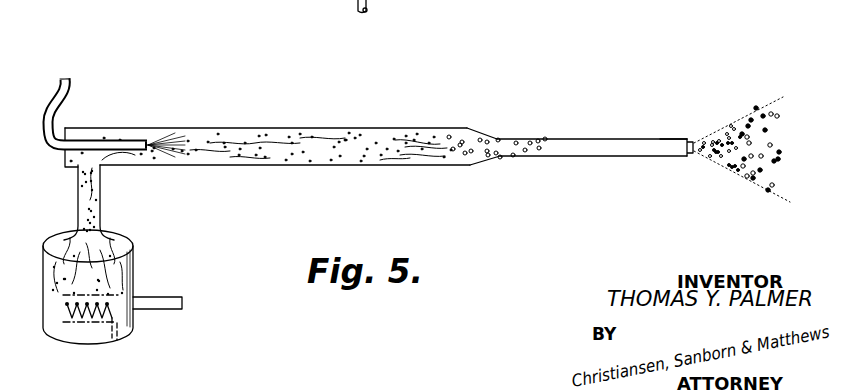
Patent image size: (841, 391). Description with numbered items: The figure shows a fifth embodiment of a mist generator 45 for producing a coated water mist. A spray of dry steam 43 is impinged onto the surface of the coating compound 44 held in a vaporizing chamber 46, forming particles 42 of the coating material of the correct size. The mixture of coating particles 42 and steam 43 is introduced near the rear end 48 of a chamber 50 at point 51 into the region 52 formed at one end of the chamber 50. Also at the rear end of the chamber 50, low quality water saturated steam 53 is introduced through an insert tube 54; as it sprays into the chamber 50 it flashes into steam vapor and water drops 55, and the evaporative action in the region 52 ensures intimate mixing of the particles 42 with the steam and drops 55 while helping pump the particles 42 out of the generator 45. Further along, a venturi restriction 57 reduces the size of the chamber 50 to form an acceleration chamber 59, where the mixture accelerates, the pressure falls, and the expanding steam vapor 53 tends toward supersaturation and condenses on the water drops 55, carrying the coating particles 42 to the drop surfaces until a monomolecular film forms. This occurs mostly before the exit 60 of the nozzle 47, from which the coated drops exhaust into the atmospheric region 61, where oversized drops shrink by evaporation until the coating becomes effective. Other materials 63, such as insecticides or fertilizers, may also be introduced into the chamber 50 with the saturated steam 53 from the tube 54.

The particles of coating material 42 is at (100, 208).
The dry steam 43 is at (190, 303).
The coating compound 44 is at (118, 340).
The mist generator 45 is at (307, 106).
The vaporizing chamber 46 is at (120, 269).
The nozzle 47 is at (672, 140).
The rear end of chamber 48 is at (76, 133).
The chamber 50 is at (407, 137).
The introduction point 51 is at (100, 156).
The region 52 is at (388, 155).
The low quality steam 53 is at (59, 67).
The insert tube 54 is at (147, 142).
The water drops 55 is at (474, 159).
The venturi restriction 57 is at (493, 137).
The acceleration chamber 59 is at (607, 139).
The exit of nozzle 60 is at (692, 158).
The atmospheric region 61 is at (804, 155).
The other materials 63 is at (72, 66).